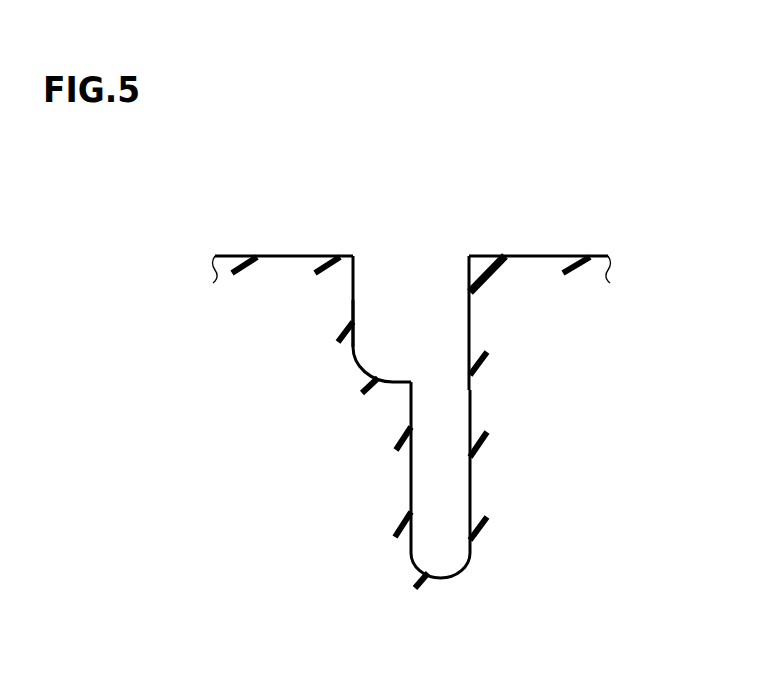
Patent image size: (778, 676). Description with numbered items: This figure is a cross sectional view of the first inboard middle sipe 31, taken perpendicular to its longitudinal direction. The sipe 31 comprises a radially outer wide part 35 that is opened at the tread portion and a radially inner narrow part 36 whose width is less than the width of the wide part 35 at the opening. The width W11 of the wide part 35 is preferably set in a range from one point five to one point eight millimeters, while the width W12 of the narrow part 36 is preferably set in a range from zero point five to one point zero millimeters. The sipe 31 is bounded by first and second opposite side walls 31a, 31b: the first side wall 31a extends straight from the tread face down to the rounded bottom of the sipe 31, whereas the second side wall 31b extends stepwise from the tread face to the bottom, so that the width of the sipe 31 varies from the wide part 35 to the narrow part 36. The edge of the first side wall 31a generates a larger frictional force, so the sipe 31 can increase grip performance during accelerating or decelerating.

The first inboard middle sipe 31 is at (510, 422).
The first side wall 31a is at (469, 304).
The second side wall 31b is at (353, 303).
The wide part 35 is at (423, 342).
The narrow part 36 is at (446, 495).
The width of the wide part W11 is at (469, 205).
The width of the narrow part W12 is at (411, 553).